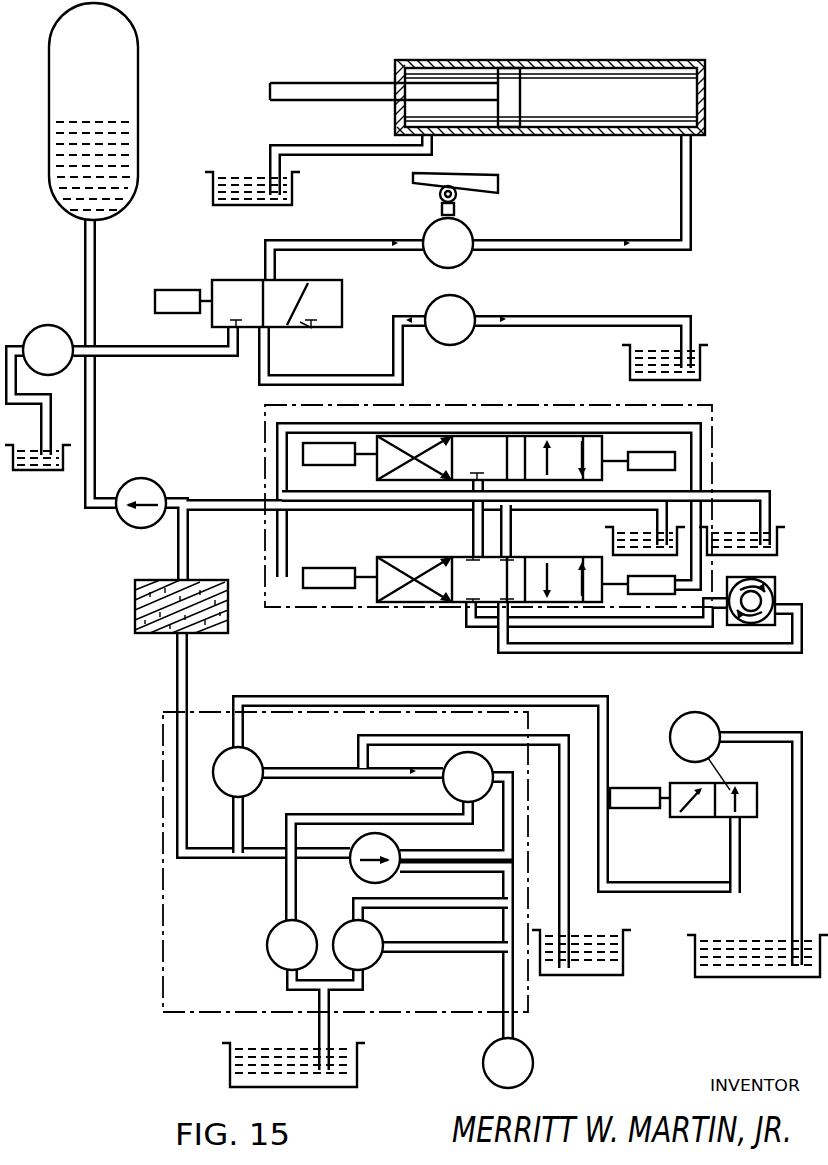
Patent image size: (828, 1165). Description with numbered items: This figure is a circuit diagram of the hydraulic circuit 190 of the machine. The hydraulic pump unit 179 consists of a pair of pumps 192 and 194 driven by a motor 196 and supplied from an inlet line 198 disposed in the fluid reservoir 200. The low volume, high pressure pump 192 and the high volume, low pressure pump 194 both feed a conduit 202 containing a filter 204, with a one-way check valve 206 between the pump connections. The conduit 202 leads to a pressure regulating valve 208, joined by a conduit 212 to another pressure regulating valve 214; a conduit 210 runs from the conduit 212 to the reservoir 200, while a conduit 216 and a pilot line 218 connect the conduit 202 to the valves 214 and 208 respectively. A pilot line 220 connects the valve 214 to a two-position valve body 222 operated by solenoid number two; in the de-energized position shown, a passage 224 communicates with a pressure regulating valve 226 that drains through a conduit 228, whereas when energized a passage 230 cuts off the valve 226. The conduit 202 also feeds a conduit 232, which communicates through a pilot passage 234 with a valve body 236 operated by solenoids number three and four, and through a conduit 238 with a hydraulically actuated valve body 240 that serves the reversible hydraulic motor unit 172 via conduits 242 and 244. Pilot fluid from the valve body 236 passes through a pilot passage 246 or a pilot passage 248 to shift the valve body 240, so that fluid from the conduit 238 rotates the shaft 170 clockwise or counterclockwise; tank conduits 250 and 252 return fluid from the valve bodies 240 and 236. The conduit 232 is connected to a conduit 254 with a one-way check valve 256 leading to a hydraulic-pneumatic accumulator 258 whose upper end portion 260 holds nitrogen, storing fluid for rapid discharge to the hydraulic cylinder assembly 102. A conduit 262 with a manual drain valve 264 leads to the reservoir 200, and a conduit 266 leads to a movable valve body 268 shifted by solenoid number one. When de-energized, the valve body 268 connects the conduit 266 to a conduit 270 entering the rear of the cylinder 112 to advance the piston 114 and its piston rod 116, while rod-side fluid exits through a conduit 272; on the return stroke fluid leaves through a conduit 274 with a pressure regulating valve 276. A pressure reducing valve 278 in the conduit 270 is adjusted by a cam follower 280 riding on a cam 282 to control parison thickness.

The hydraulic cylinder assembly 102 is at (516, 83).
The cylinder 112 is at (555, 60).
The piston 114 is at (512, 96).
The piston rod 116 is at (315, 86).
The shaft 170 is at (776, 605).
The reversible hydraulic motor unit 172 is at (771, 588).
The hydraulic pump unit 179 is at (160, 926).
The hydraulic circuit 190 is at (113, 672).
The pump 192 is at (270, 932).
The pump 194 is at (382, 933).
The motor 196 is at (533, 1065).
The inlet line 198 is at (333, 1007).
The fluid reservoir 200 is at (296, 190).
The conduit 202 is at (216, 862).
The filter 204 is at (228, 630).
The one-way check valve 206 is at (399, 849).
The pressure regulating valve 208 is at (484, 770).
The conduit 210 is at (552, 740).
The conduit 212 is at (390, 782).
The pressure regulating valve 214 is at (258, 770).
The conduit 216 is at (244, 811).
The pilot line 218 is at (314, 815).
The pilot line 220 is at (350, 700).
The two-position valve body 222 is at (683, 804).
The passage 224 is at (742, 838).
The pressure regulating valve 226 is at (710, 734).
The conduit 228 is at (790, 877).
The passage 230 is at (675, 788).
The conduit 232 is at (216, 501).
The pilot passage 234 is at (470, 494).
The valve body 236 is at (600, 452).
The conduit 238 is at (472, 528).
The hydraulically actuated valve body 240 is at (489, 557).
The conduit 242 is at (632, 622).
The conduit 244 is at (657, 650).
The pilot passage 246 is at (425, 420).
The pilot passage 248 is at (703, 468).
The tank conduit 250 is at (548, 512).
The tank conduit 252 is at (722, 499).
The conduit 254 is at (96, 434).
The one-way check valve 256 is at (143, 480).
The hydraulic-pneumatic accumulator 258 is at (117, 111).
The upper end portion 260 is at (100, 84).
The conduit 262 is at (14, 343).
The manual drain valve 264 is at (74, 369).
The conduit 266 is at (160, 360).
The movable valve body 268 is at (343, 302).
The conduit 270 is at (556, 244).
The conduit 272 is at (318, 150).
The conduit 274 is at (404, 379).
The pressure regulating valve 276 is at (468, 310).
The pressure reducing valve 278 is at (466, 237).
The cam follower 280 is at (439, 201).
The cam 282 is at (490, 184).